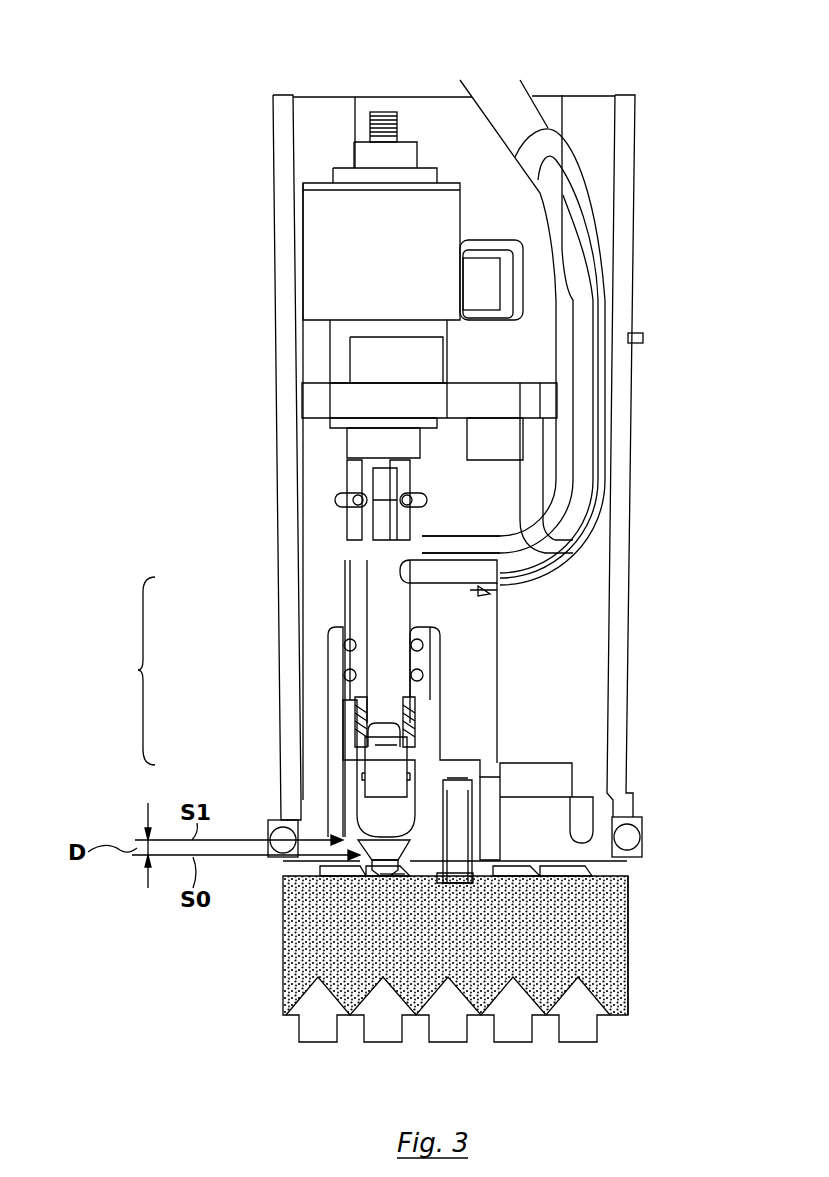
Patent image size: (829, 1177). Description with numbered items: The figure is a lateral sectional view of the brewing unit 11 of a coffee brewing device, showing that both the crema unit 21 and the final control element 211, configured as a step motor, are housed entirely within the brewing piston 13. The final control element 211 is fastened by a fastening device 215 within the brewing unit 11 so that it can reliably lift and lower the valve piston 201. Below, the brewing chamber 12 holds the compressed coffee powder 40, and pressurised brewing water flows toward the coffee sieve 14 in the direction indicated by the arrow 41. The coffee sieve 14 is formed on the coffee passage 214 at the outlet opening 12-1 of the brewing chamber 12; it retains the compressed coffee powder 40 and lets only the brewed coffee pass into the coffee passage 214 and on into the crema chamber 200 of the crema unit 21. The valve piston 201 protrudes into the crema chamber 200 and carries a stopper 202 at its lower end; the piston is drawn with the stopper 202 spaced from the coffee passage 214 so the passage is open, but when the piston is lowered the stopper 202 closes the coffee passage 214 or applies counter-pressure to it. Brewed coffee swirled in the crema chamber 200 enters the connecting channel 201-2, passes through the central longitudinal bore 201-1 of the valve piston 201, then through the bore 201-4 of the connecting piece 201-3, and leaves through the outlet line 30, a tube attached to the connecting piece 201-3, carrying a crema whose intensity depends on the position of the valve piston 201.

The brewing piston 13 is at (622, 728).
The outlet line 30 is at (542, 137).
The fastening device 215 is at (513, 230).
The final control element 211 is at (345, 278).
The bore 201-4 is at (487, 570).
The connecting piece 201-3 is at (500, 592).
The central longitudinal bore 201-1 is at (388, 620).
The connecting channel 201-2 is at (410, 712).
The crema unit 21 is at (132, 671).
The valve piston 201 is at (353, 693).
The crema chamber 200 is at (348, 772).
The stopper 202 is at (360, 810).
The coffee passage 214 is at (375, 862).
The coffee sieve 14 is at (393, 868).
The brewing chamber 12 is at (758, 1030).
The compressed coffee powder 40 is at (628, 915).
The outlet opening 12-1 is at (394, 880).
The arrow 41 is at (585, 1023).
The brewing unit 11 is at (300, 1085).